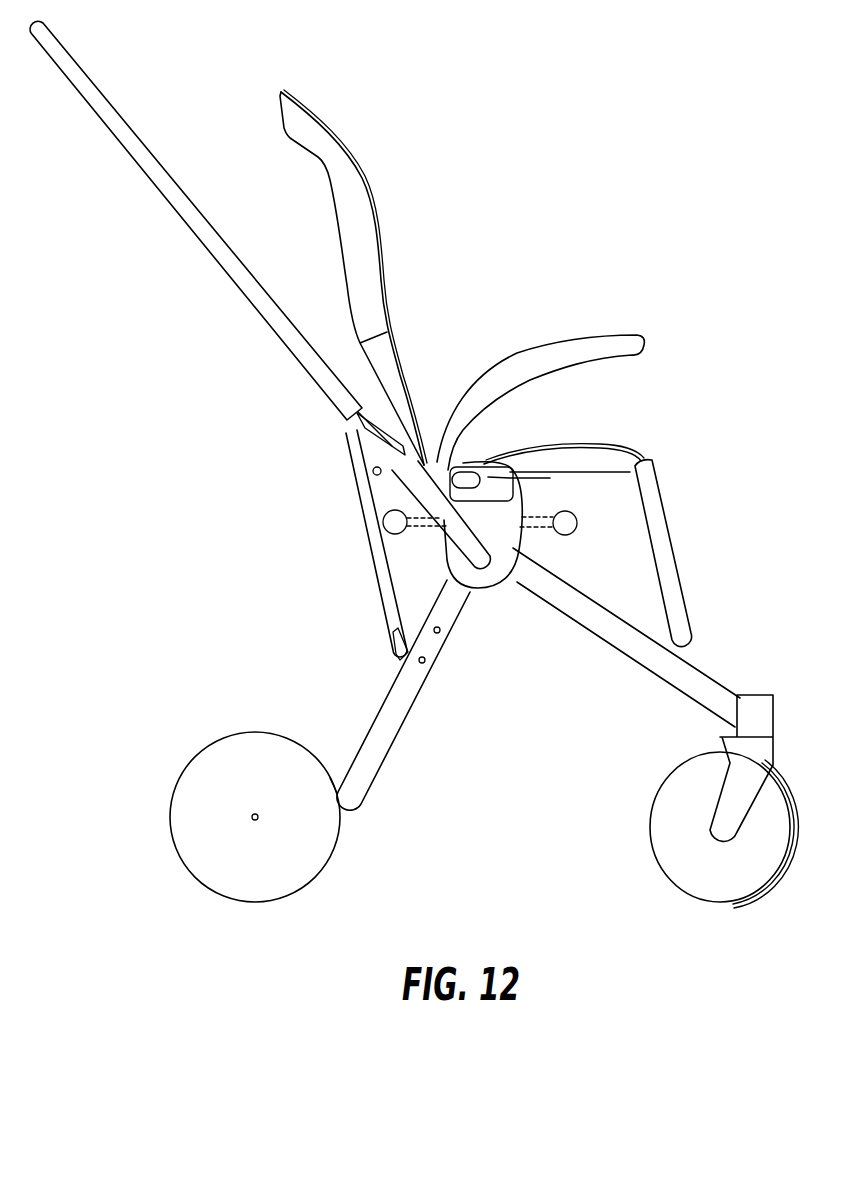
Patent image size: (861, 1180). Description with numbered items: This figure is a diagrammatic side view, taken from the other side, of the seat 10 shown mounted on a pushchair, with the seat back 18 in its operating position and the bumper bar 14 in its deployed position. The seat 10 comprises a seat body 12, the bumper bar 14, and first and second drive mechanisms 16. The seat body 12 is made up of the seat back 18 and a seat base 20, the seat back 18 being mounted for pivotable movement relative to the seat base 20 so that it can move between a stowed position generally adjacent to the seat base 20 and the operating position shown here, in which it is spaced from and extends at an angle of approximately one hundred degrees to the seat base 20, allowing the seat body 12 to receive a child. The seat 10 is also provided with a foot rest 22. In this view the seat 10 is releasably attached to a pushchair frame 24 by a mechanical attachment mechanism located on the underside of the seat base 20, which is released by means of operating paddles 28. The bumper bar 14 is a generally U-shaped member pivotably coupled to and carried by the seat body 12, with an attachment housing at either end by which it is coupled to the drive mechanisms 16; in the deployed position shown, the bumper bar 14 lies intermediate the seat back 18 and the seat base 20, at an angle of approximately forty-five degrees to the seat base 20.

The seat 10 is at (668, 236).
The seat body 12 is at (507, 292).
The bumper bar 14 is at (646, 346).
The drive mechanisms 16 is at (382, 482).
The seat back 18 is at (327, 157).
The seat base 20 is at (597, 469).
The foot rest 22 is at (680, 574).
The pushchair frame 24 is at (634, 655).
The operating paddles 28 is at (516, 596).